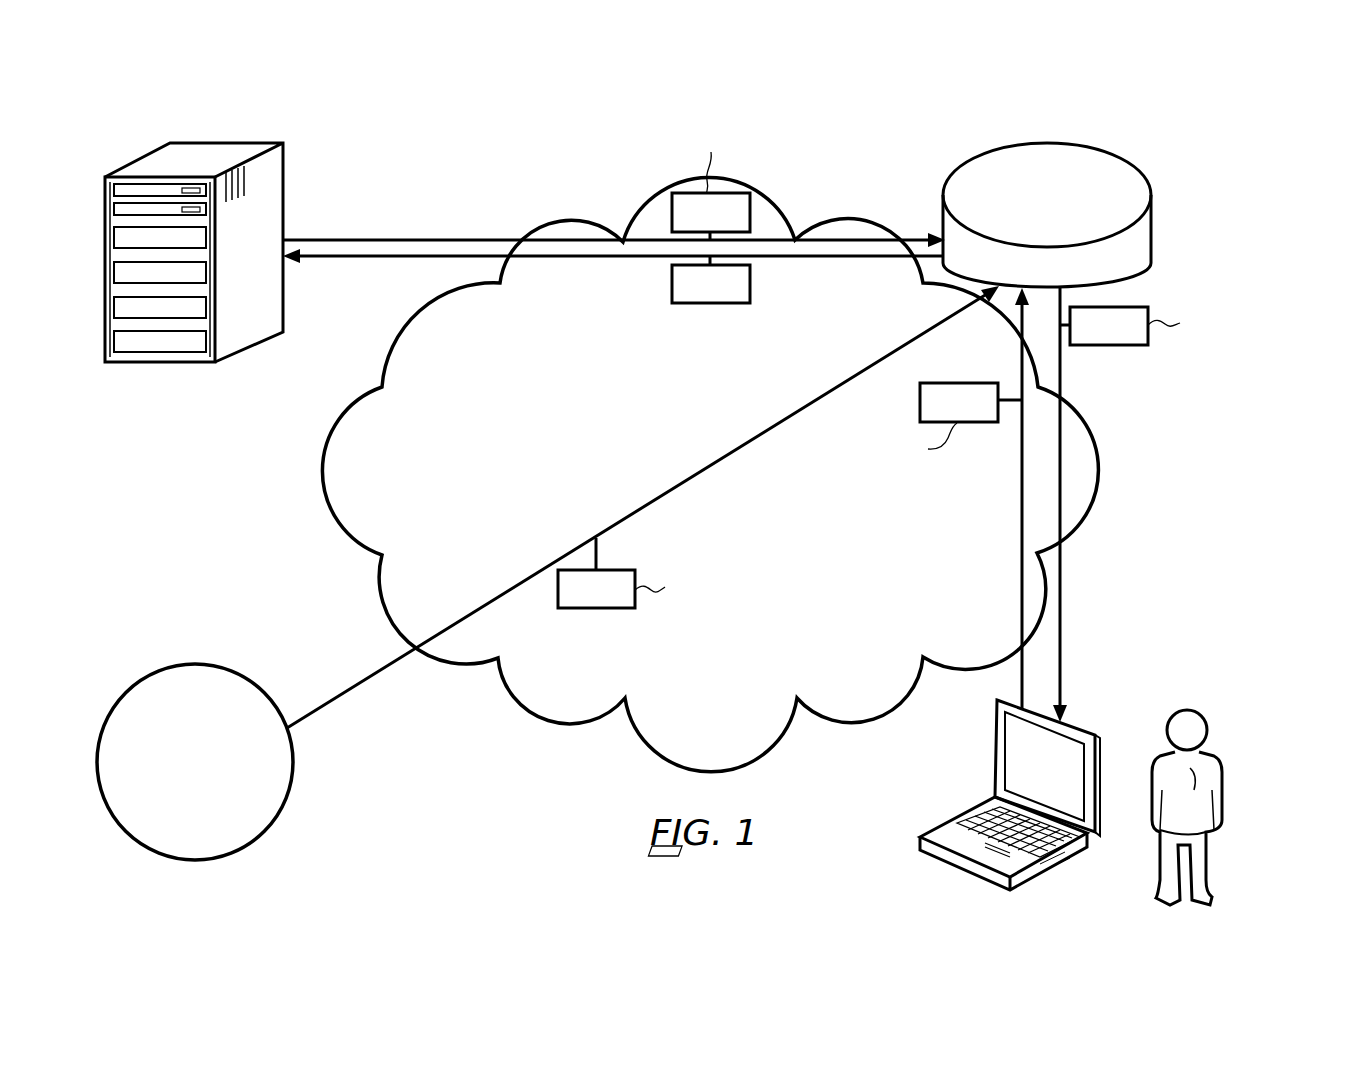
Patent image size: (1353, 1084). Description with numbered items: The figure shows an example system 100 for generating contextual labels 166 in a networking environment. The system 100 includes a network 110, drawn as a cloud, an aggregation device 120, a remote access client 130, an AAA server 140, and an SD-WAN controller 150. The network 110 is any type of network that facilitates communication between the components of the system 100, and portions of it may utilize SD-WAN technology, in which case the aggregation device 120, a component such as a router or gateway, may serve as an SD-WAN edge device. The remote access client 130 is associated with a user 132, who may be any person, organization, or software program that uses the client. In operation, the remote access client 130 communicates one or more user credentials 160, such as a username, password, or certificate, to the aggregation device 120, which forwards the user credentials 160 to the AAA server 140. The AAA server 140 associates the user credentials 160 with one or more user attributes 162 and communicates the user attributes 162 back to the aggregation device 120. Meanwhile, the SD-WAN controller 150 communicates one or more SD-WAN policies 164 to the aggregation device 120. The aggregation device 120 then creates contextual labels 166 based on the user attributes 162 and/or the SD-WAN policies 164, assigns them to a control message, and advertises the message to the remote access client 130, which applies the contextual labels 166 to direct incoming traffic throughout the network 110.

The system 100 is at (1165, 76).
The network 110 is at (727, 421).
The aggregation device 120 is at (1065, 231).
The remote access client 130 is at (997, 752).
The user 132 is at (1203, 716).
The AAA server 140 is at (283, 186).
The SD-WAN controller 150 is at (210, 798).
The user credentials 160 is at (727, 296).
The user attributes 162 is at (727, 225).
The SD-WAN policies 164 is at (613, 601).
The contextual labels 166 is at (1185, 331).